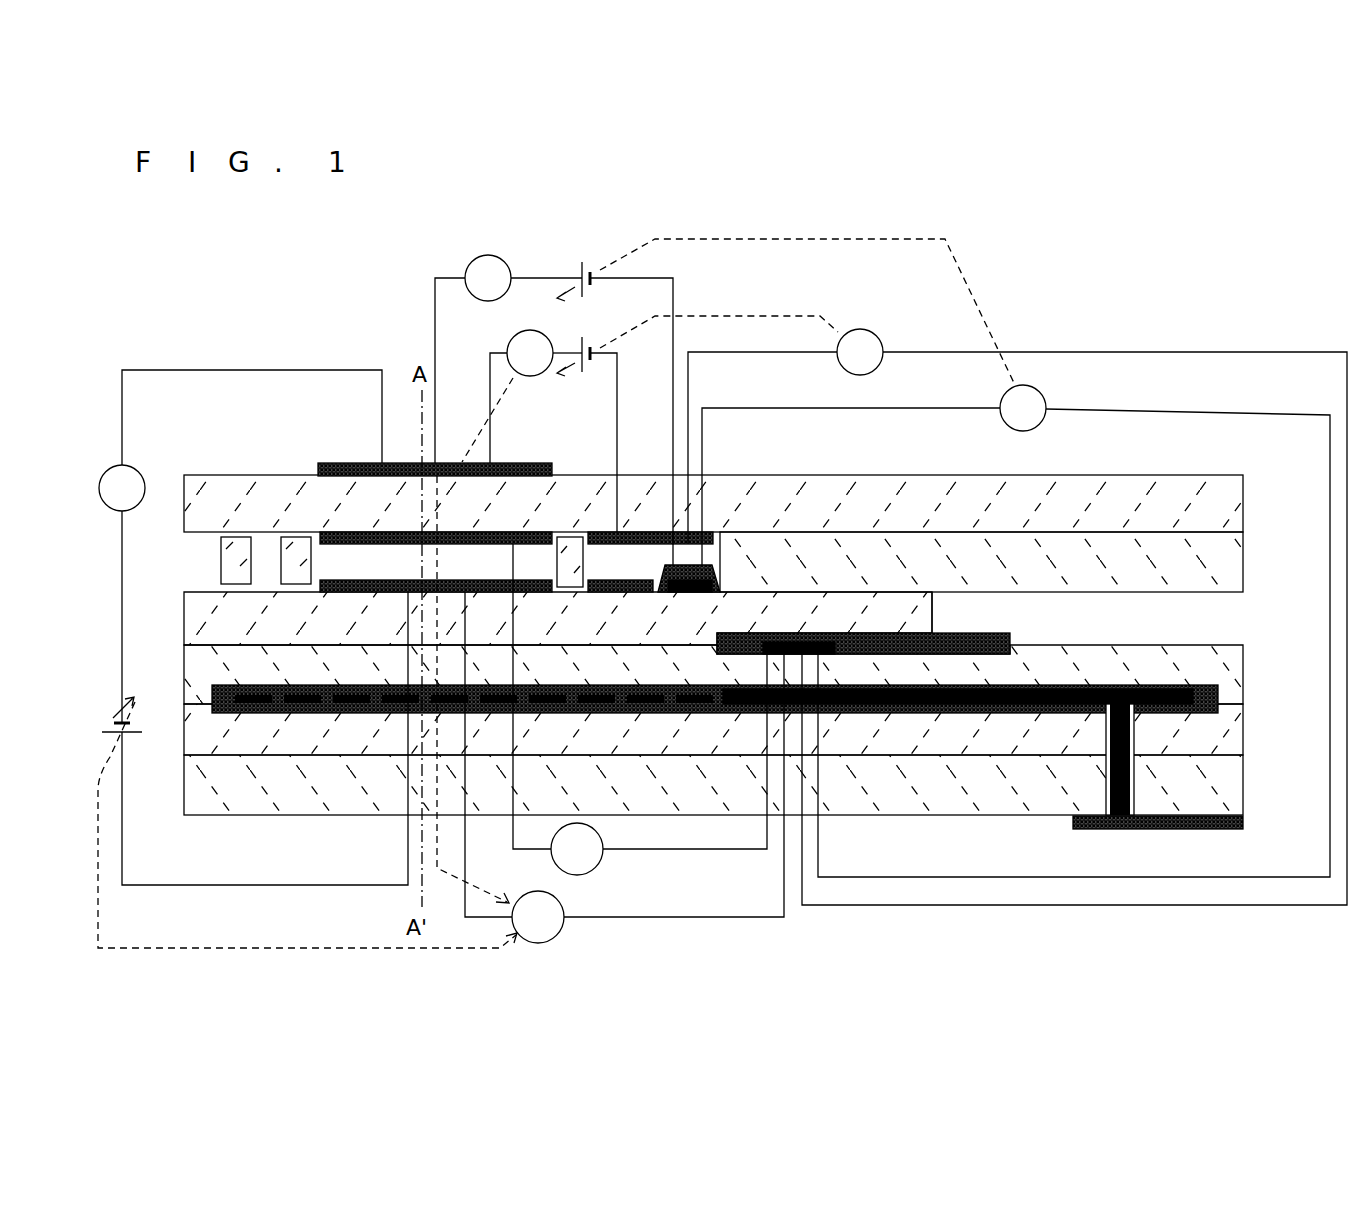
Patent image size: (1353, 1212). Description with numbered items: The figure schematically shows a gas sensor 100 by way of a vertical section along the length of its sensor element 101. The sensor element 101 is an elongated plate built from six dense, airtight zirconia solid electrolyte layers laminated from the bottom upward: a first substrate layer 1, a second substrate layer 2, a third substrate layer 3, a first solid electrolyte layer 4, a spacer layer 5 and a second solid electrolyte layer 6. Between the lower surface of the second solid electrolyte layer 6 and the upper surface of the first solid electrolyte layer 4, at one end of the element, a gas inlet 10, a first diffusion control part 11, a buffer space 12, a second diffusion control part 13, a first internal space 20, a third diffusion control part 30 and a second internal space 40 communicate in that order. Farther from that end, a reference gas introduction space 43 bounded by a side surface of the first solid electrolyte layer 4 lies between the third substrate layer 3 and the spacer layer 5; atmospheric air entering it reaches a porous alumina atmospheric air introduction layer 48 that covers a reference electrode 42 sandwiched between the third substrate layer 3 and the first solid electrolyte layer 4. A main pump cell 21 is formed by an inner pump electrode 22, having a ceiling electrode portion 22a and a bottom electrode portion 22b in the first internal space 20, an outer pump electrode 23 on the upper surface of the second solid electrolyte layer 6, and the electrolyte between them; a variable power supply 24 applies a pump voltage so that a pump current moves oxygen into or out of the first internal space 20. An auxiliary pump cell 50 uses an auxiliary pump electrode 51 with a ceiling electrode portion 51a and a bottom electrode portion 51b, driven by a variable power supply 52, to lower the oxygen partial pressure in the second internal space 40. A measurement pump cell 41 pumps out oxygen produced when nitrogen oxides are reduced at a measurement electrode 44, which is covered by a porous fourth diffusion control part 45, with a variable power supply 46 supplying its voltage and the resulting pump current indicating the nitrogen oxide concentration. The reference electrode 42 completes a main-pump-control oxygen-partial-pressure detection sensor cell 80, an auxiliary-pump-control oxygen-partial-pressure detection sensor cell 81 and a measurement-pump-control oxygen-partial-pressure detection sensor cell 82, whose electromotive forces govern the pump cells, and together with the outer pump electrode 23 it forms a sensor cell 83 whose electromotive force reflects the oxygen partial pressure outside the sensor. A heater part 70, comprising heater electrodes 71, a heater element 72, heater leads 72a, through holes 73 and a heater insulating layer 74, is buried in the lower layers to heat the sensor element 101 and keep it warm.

The first substrate layer 1 is at (1244, 777).
The second substrate layer 2 is at (1244, 732).
The third substrate layer 3 is at (1244, 663).
The first solid electrolyte layer 4 is at (190, 620).
The spacer layer 5 is at (1244, 540).
The second solid electrolyte layer 6 is at (1244, 504).
The gas inlet 10 is at (200, 559).
The first diffusion control part 11 is at (231, 535).
The buffer space 12 is at (262, 545).
The second diffusion control part 13 is at (297, 535).
The first internal space 20 is at (477, 560).
The main pump cell 21 is at (237, 366).
The inner pump electrode 22 is at (404, 532).
The ceiling electrode portion 22a is at (460, 532).
The bottom electrode portion 22b is at (400, 580).
The outer pump electrode 23 is at (340, 463).
The variable power supply 24 is at (102, 730).
The third diffusion control part 30 is at (572, 536).
The second internal space 40 is at (600, 532).
The measurement pump cell 41 is at (455, 270).
The reference electrode 42 is at (838, 655).
The reference gas introduction space 43 is at (1230, 617).
The measurement electrode 44 is at (676, 594).
The fourth diffusion control part 45 is at (660, 568).
The variable power supply 46 is at (586, 260).
The atmospheric air introduction layer 48 is at (742, 636).
The auxiliary pump cell 50 is at (624, 468).
The auxiliary pump electrode 51 is at (652, 532).
The ceiling electrode portion 51a is at (718, 532).
The bottom electrode portion 51b is at (604, 594).
The variable power supply 52 is at (586, 375).
The heater part 70 is at (842, 740).
The heater electrode 71 is at (1244, 822).
The heater element 72 is at (258, 703).
The heater lead 72a is at (1000, 706).
The through hole 73 is at (1135, 780).
The heater insulating layer 74 is at (215, 713).
The main-pump-control oxygen-partial-pressure detection sensor cell 80 is at (585, 928).
The auxiliary-pump-control oxygen-partial-pressure detection sensor cell 81 is at (1103, 345).
The measurement-pump-control oxygen-partial-pressure detection sensor cell 82 is at (1110, 405).
The sensor cell 83 is at (613, 858).
The gas sensor 100 is at (170, 310).
The sensor element 101 is at (1092, 475).